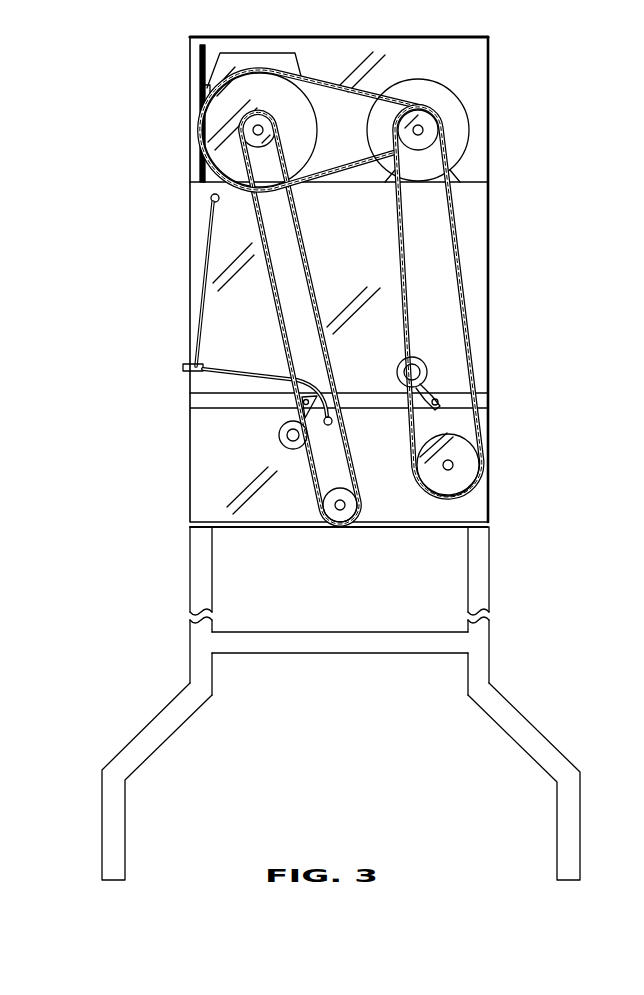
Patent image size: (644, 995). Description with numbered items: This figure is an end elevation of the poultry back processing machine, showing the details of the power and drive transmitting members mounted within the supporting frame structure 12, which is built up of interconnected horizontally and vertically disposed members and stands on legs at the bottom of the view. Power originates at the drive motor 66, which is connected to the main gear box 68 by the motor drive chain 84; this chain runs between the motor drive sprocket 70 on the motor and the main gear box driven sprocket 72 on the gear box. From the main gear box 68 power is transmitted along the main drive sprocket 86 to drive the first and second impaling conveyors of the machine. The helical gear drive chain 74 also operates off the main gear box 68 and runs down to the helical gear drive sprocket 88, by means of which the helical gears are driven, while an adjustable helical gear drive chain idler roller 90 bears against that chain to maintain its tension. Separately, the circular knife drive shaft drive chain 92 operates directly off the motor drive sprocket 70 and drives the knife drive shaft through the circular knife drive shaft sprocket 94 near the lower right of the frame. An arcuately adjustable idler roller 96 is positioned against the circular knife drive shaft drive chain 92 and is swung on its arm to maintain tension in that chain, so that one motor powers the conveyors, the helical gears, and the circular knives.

The supporting frame structure 12 is at (502, 548).
The drive motor 66 is at (423, 80).
The main gear box 68 is at (296, 56).
The motor drive sprocket 70 is at (437, 115).
The main gear box driven sprocket 72 is at (318, 138).
The helical gear drive chain 74 is at (303, 243).
The motor drive chain 84 is at (344, 99).
The main drive sprocket 86 is at (200, 62).
The helical gear drive sprocket 88 is at (331, 488).
The adjustable helical gear drive chain idler roller 90 is at (279, 435).
The circular knife drive shaft drive chain 92 is at (448, 210).
The circular knife drive shaft sprocket 94 is at (460, 432).
The arcuately adjustable idler roller 96 is at (418, 360).